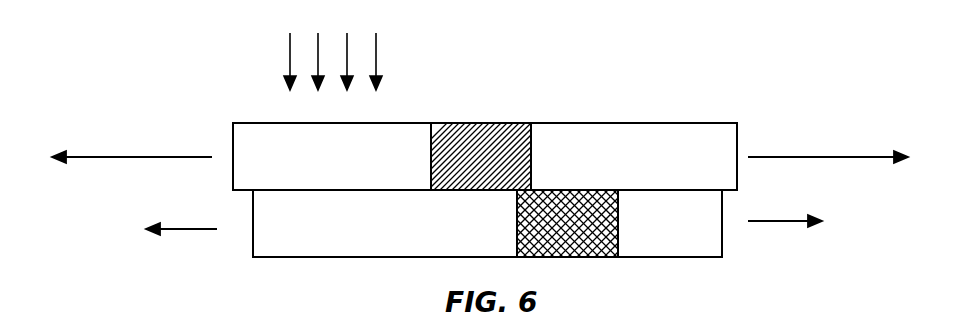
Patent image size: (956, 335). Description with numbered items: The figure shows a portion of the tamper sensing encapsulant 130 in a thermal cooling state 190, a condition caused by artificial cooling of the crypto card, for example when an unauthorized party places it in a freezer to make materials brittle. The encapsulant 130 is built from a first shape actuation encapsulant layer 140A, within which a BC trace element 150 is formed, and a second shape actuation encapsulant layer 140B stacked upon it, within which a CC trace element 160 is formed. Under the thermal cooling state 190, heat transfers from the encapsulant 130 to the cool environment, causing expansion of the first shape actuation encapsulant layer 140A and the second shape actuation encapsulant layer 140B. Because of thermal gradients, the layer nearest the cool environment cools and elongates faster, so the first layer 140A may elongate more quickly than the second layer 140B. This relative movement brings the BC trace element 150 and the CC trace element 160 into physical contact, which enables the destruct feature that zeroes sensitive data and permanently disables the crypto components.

The tamper sensing encapsulant 130 is at (654, 73).
The first shape actuation encapsulant layer 140A is at (703, 257).
The second shape actuation encapsulant layer 140B is at (702, 130).
The BC trace element 150 is at (577, 258).
The CC trace element 160 is at (457, 132).
The thermal cooling state 190 is at (350, 20).